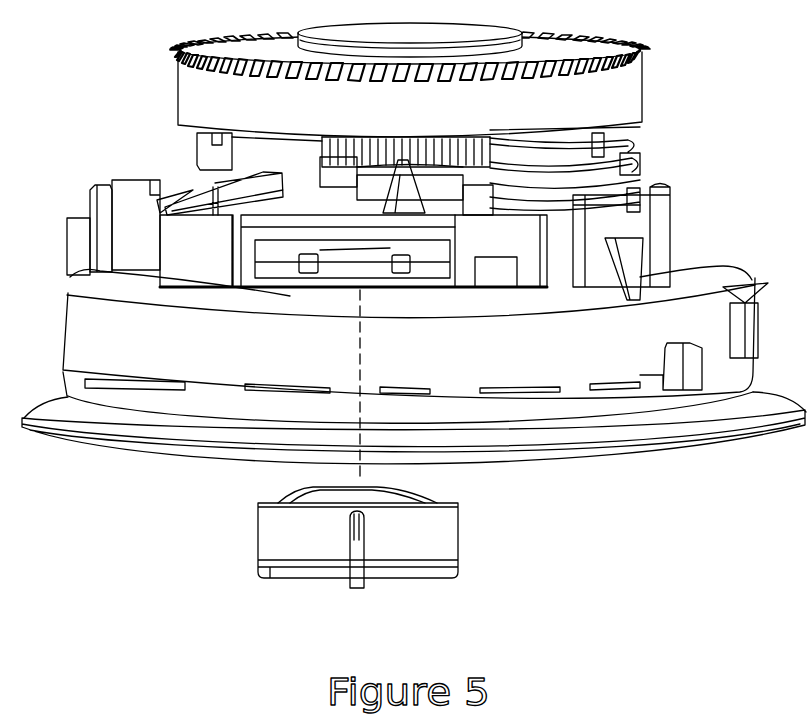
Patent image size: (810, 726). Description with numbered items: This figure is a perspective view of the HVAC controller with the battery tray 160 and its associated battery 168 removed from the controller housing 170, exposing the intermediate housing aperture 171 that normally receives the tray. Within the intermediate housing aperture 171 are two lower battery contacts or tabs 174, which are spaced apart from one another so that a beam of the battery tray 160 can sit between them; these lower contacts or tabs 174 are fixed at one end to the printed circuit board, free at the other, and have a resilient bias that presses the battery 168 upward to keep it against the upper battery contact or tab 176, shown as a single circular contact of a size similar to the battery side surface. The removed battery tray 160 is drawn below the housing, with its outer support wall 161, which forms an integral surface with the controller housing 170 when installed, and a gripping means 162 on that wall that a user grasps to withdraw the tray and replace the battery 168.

The battery tray 160 is at (381, 551).
The outer support wall 161 is at (272, 532).
The gripping means 162 is at (360, 588).
The battery 168 is at (317, 495).
The controller housing 170 is at (495, 240).
The intermediate housing aperture 171 is at (255, 295).
The lower battery contacts or tabs 174 is at (303, 272).
The upper battery contact or tab 176 is at (320, 248).